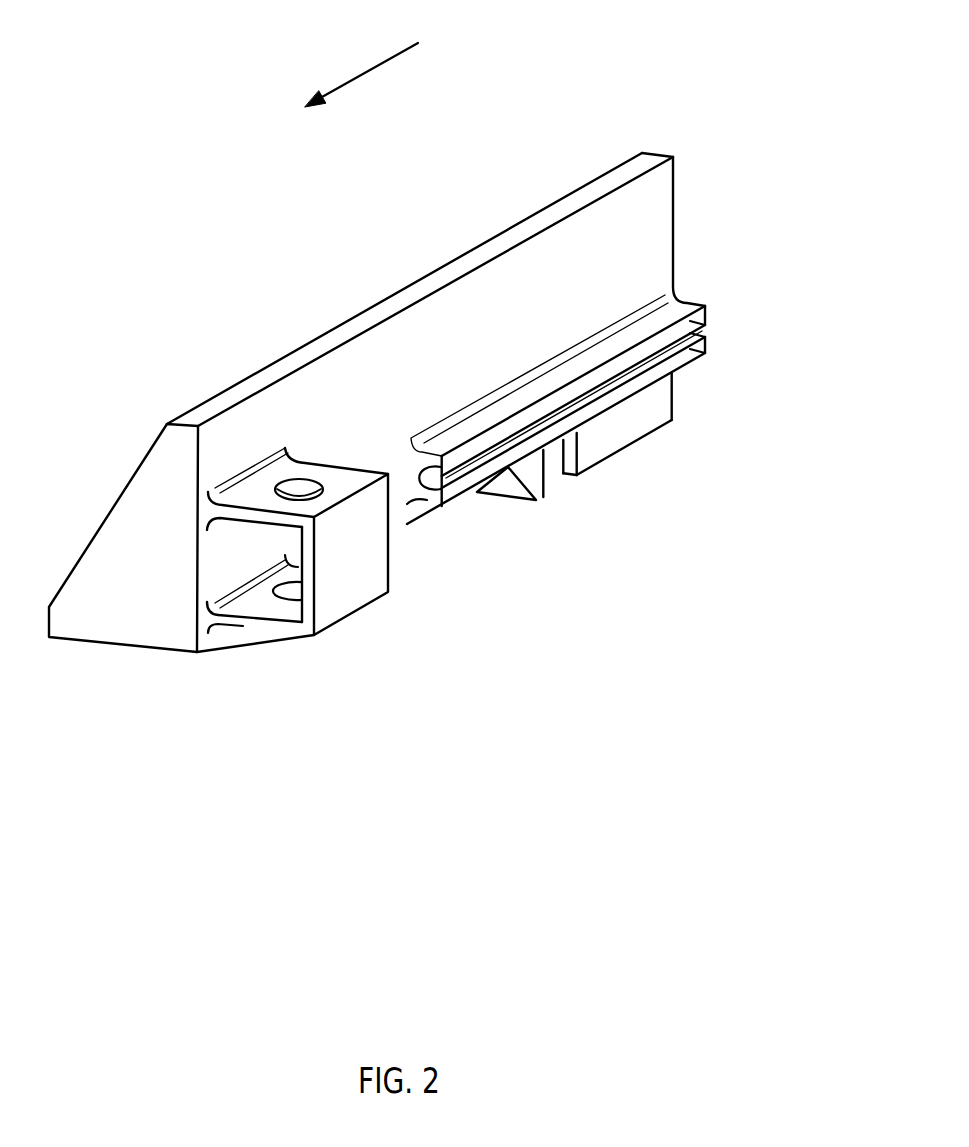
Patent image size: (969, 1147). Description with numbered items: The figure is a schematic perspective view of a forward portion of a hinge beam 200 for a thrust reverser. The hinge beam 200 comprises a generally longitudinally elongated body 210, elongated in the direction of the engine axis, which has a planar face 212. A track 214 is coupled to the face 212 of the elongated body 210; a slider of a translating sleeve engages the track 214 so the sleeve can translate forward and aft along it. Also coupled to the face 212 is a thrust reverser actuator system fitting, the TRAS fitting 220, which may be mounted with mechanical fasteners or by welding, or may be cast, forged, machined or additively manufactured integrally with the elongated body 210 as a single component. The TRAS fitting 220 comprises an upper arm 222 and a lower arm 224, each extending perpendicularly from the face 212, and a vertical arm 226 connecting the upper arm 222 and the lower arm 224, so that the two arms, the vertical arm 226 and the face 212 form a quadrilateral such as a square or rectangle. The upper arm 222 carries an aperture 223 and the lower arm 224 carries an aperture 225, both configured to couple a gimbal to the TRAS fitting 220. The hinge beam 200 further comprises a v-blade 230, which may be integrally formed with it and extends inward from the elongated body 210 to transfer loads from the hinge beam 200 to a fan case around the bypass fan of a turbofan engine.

The hinge beam 200 is at (208, 105).
The elongated body 210 is at (108, 512).
The planar face 212 is at (665, 228).
The track 214 is at (690, 362).
The thrust reverser actuator system (TRAS) fitting 220 is at (361, 526).
The upper arm 222 is at (338, 468).
The aperture 223 is at (275, 493).
The lower arm 224 is at (255, 627).
The aperture 225 is at (285, 602).
The vertical arm 226 is at (390, 563).
The v-blade 230 is at (536, 500).